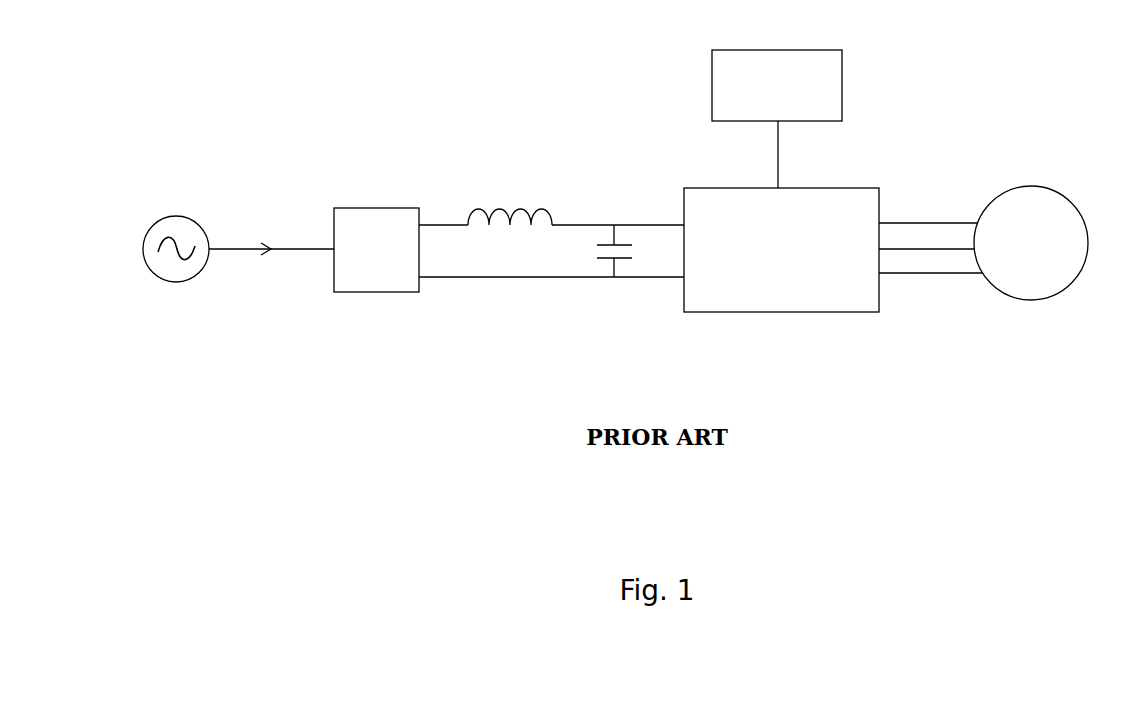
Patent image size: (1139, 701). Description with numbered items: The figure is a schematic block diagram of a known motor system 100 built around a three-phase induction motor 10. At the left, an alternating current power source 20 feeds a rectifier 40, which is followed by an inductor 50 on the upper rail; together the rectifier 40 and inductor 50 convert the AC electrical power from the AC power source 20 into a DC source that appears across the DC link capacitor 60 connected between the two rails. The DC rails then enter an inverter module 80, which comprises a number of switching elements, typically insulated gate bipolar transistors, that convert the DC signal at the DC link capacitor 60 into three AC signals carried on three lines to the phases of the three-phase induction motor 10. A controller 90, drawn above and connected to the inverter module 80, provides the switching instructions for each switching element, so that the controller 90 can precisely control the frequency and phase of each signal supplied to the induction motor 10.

The motor system 100 is at (267, 91).
The three-phase induction motor 10 is at (1050, 185).
The alternating current (AC) power source 20 is at (177, 218).
The rectifier 40 is at (353, 292).
The inductor 50 is at (522, 202).
The direct current (DC) link capacitor 60 is at (608, 260).
The inverter module 80 is at (798, 315).
The controller 90 is at (842, 73).